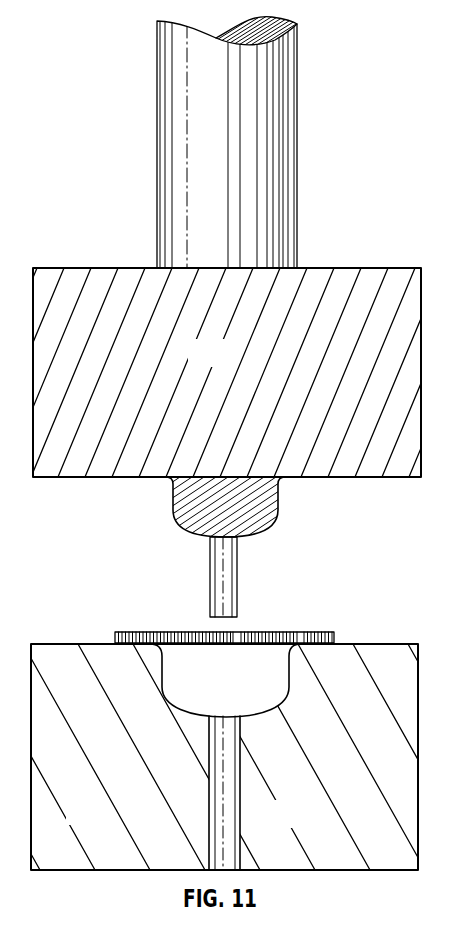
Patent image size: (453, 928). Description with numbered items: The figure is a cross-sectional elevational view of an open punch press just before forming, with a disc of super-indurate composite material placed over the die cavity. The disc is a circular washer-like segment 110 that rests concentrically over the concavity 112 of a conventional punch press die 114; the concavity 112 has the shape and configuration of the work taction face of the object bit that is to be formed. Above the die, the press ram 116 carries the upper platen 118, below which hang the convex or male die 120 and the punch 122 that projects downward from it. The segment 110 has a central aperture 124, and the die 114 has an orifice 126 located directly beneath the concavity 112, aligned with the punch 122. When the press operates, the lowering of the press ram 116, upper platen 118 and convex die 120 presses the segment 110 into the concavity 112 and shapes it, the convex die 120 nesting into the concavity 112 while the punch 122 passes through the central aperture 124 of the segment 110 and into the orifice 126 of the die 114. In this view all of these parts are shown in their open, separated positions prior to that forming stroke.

The circular washer-like segment 110 is at (302, 638).
The concavity 112 is at (191, 686).
The punch press die 114 is at (100, 822).
The press ram 116 is at (219, 188).
The upper platen 118 is at (220, 364).
The convex die 120 is at (278, 499).
The punch 122 is at (237, 575).
The central aperture 124 is at (227, 637).
The orifice 126 is at (240, 810).